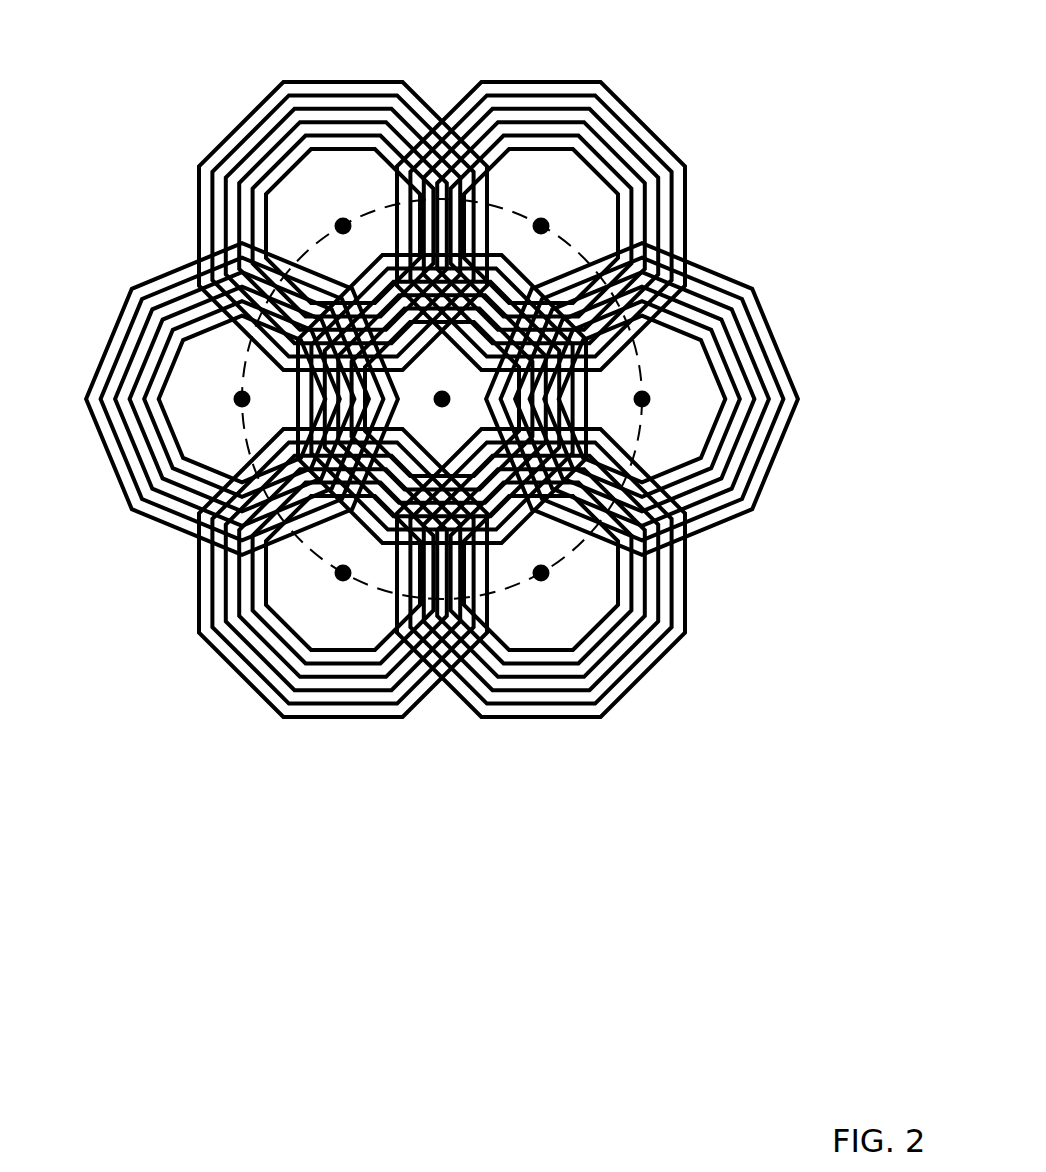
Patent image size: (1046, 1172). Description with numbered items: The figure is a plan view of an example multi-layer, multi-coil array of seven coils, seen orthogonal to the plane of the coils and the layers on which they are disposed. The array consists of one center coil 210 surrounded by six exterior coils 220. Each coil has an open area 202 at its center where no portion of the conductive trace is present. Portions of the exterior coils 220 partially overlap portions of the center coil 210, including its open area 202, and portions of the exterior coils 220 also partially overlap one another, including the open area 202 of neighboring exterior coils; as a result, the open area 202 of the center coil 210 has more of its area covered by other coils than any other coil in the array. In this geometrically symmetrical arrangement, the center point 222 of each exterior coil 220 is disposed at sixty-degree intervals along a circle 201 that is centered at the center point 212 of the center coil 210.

The circle 201 is at (351, 399).
The open area 202 is at (328, 226).
The center coil 210 is at (462, 298).
The center point of the inner coil 212 is at (497, 212).
The exterior coil 220 is at (432, 399).
The center point of the outer coil 222 is at (454, 393).